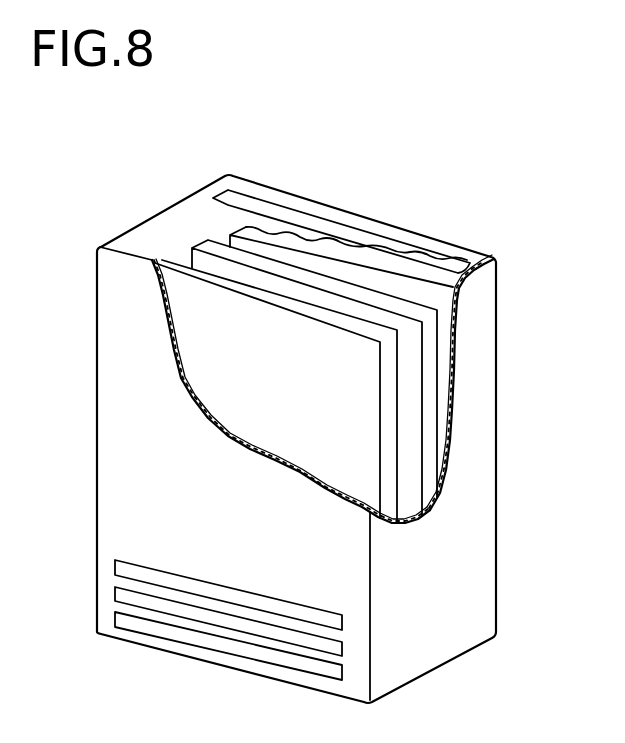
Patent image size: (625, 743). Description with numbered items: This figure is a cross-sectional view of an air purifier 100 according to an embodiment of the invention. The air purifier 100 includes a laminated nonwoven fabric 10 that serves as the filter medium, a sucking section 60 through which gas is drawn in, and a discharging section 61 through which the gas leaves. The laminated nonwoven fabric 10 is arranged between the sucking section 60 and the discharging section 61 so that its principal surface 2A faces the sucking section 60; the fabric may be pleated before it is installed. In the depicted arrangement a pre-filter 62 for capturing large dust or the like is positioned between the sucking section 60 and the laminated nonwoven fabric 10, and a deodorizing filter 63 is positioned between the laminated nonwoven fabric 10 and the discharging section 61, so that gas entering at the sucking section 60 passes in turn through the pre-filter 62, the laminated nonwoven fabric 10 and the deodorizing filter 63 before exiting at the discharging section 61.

The air purifier 100 is at (438, 114).
The laminated nonwoven fabric 10 is at (208, 244).
The discharging section 61 is at (259, 207).
The pre-filter 62 is at (218, 360).
The deodorizing filter 63 is at (442, 305).
The principal surface 2A is at (405, 384).
The sucking section 60 is at (76, 553).